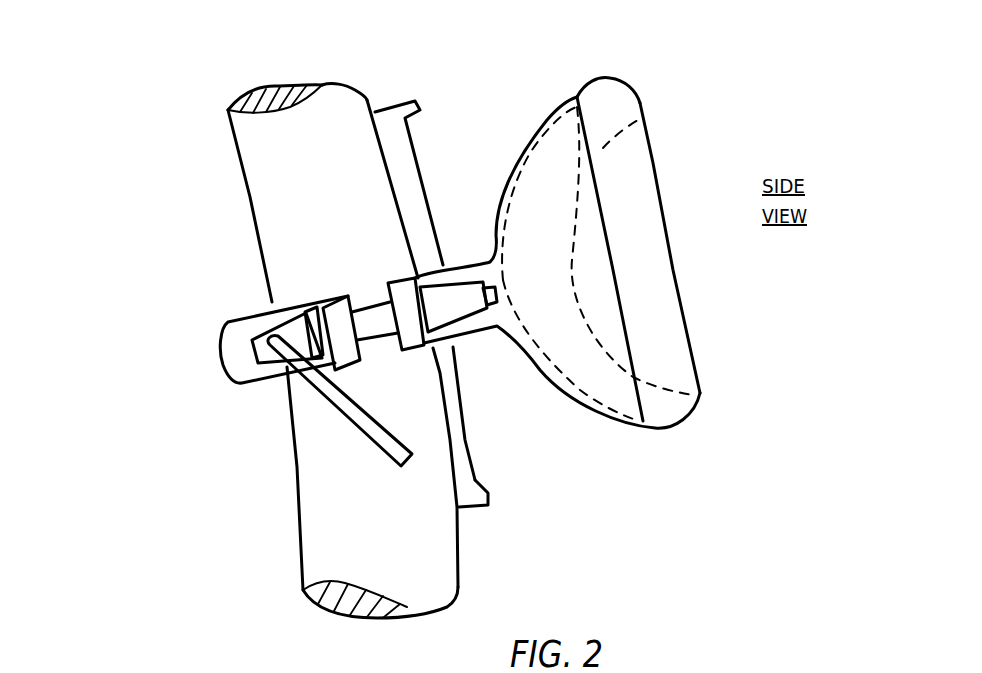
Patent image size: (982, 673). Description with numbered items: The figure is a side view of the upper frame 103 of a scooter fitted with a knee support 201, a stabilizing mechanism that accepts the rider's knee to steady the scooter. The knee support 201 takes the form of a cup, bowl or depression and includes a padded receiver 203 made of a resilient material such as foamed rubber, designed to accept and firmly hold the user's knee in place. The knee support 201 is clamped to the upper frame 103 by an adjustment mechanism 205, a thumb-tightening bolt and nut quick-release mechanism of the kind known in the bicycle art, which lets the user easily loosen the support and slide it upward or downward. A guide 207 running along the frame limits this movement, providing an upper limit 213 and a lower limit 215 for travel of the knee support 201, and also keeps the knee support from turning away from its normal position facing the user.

The upper frame 103 is at (243, 178).
The knee support 201 is at (545, 183).
The padded receiver 203 is at (622, 168).
The adjustment mechanism 205 is at (225, 368).
The guide 207 is at (484, 465).
The upper limit 213 is at (498, 300).
The lower limit 215 is at (478, 522).